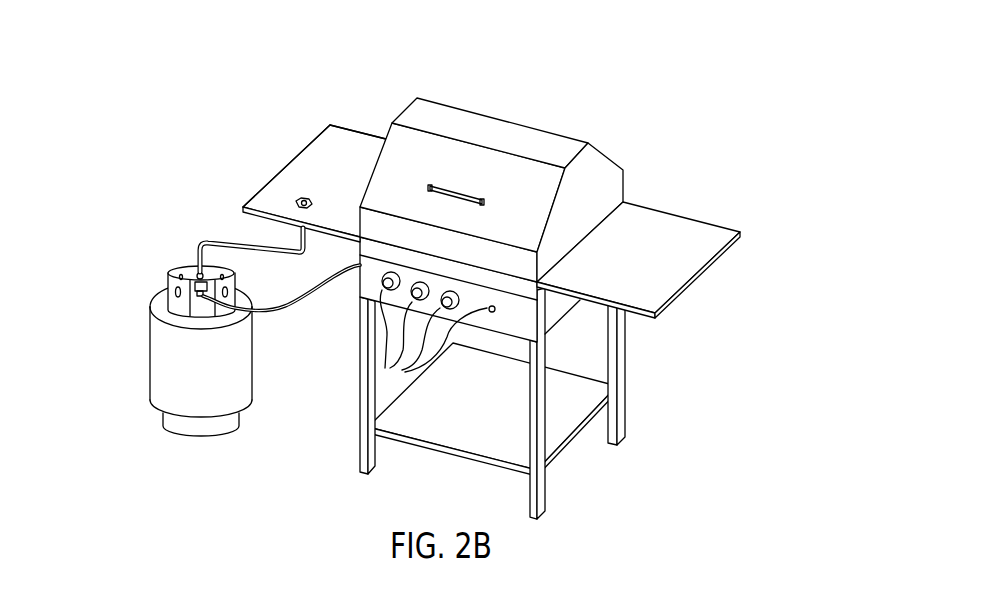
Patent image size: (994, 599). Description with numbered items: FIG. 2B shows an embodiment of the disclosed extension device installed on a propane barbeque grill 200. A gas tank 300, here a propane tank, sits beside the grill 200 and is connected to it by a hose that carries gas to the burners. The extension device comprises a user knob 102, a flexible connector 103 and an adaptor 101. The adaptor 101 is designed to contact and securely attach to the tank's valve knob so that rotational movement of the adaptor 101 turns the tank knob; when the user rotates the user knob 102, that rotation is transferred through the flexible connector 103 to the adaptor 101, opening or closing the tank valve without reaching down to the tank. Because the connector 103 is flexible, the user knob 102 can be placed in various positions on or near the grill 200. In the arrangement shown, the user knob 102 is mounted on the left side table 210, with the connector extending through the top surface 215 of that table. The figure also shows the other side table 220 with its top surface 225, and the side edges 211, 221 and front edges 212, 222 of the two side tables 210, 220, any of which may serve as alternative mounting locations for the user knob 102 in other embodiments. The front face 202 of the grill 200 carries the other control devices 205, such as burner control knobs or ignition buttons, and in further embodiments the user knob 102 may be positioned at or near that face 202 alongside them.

The grill 200 is at (740, 78).
The adaptor 101 is at (178, 280).
The user knob 102 is at (307, 197).
The flexible connector 103 is at (203, 242).
The face of the grill 202 is at (510, 335).
The control devices 205 is at (427, 335).
The left side table 210 is at (280, 152).
The side edge 211 is at (257, 193).
The front edge 212 is at (267, 223).
The top surface 215 is at (359, 175).
The side table 220 is at (665, 247).
The side edge 221 is at (700, 273).
The front edge 222 is at (600, 308).
The top surface 225 is at (664, 270).
The gas tank 300 is at (150, 383).